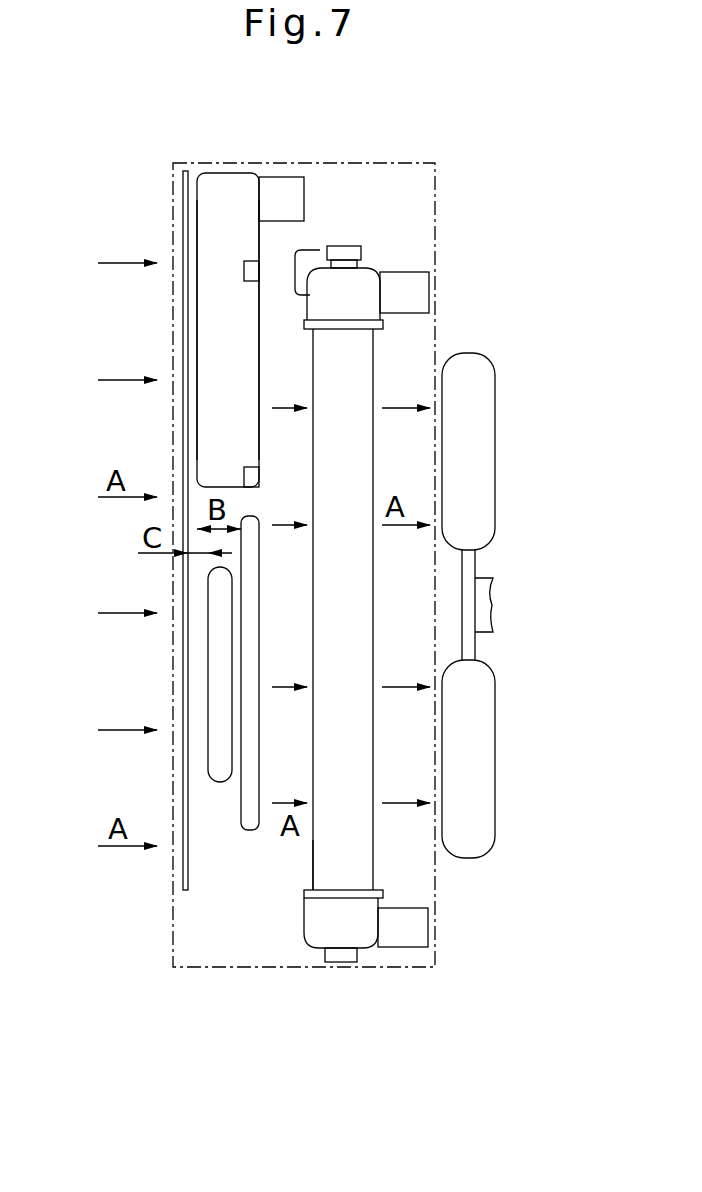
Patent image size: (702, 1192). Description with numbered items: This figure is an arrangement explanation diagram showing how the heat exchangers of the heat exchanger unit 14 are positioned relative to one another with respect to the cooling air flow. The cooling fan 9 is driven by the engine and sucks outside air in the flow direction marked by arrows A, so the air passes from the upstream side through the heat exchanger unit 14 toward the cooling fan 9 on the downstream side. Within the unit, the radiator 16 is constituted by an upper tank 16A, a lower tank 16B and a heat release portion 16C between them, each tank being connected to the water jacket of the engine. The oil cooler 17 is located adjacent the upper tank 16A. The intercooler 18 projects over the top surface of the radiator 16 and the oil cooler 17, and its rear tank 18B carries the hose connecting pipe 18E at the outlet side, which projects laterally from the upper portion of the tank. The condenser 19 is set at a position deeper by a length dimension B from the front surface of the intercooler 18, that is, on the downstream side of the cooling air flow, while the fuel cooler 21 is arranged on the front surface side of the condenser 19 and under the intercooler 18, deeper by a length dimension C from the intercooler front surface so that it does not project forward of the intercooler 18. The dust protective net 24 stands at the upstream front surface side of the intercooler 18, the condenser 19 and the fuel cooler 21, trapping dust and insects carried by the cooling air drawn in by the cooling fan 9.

The cooling fan 9 is at (470, 457).
The heat exchanger unit 14 is at (221, 975).
The radiator 16 is at (355, 724).
The upper tank 16A is at (352, 285).
The lower tank 16B is at (321, 935).
The heat release portion 16C is at (355, 855).
The oil cooler 17 is at (313, 262).
The intercooler 18 is at (208, 418).
The rear tank 18B is at (208, 338).
The hose connecting pipe at the outlet side 18E is at (277, 190).
The condenser 19 is at (250, 710).
The fuel cooler 21 is at (218, 655).
The dust protective net 24 is at (183, 589).